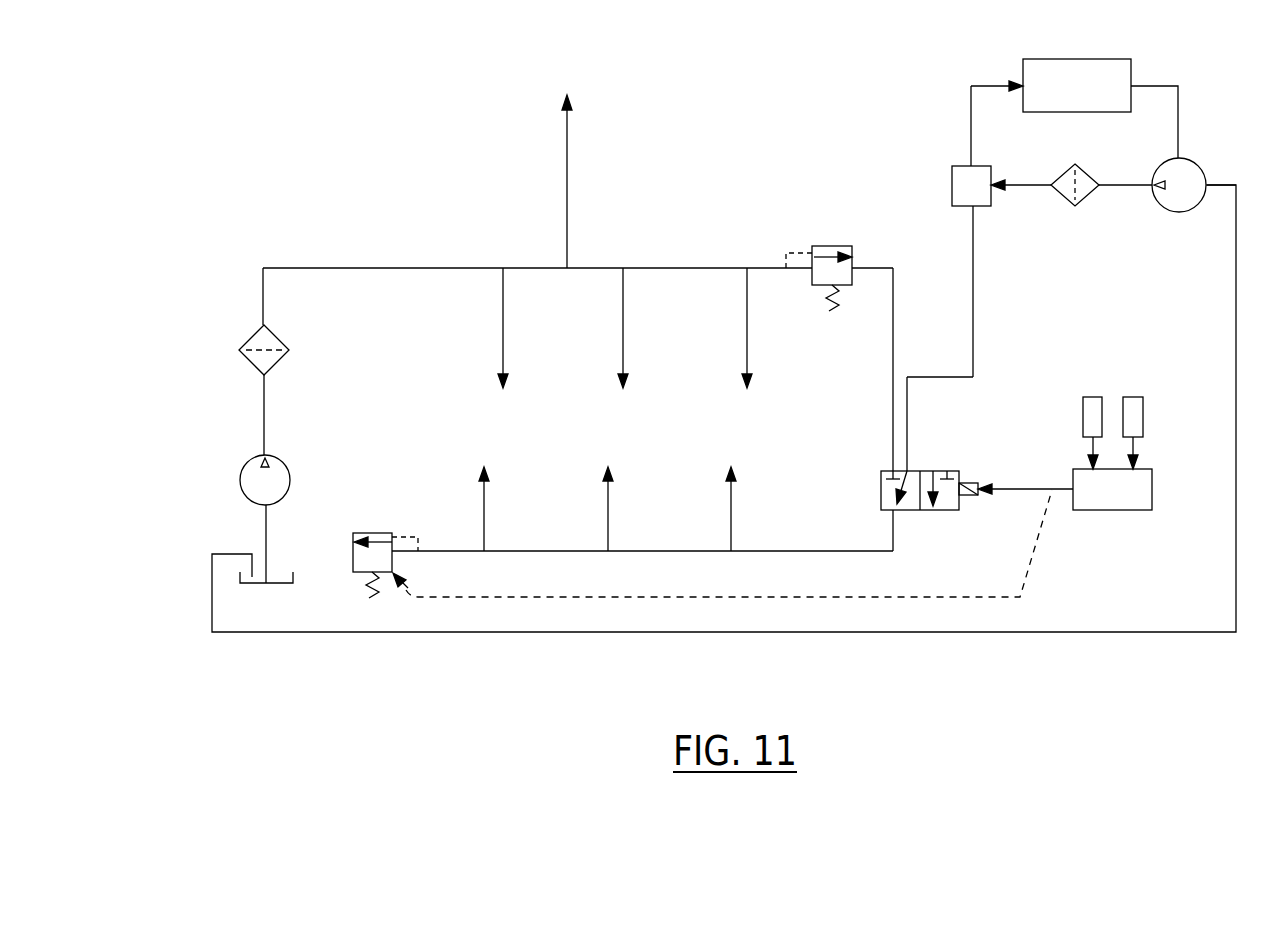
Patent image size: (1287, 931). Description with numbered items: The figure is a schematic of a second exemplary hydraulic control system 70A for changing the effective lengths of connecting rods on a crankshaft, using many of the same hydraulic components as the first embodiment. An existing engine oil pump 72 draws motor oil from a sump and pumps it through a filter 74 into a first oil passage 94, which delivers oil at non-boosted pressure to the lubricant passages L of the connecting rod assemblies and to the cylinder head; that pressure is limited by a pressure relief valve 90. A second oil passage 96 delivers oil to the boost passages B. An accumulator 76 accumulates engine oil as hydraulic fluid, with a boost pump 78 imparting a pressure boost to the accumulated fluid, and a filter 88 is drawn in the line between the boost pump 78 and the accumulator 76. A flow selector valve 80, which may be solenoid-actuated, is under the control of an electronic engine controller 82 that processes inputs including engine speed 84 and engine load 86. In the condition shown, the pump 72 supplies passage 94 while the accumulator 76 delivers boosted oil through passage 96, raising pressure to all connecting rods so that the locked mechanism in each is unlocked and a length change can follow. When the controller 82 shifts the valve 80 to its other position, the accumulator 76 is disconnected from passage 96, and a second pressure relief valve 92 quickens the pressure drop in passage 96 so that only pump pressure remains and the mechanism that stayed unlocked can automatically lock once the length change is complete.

The hydraulic control system 70A is at (355, 117).
The engine oil pump 72 is at (240, 472).
The filter 74 is at (250, 338).
The accumulator 76 is at (952, 172).
The boost pump 78 is at (1196, 165).
The flow selector valve 80 is at (958, 512).
The electronic engine controller 82 is at (1152, 483).
The engine speed 84 is at (1085, 397).
The engine load 86 is at (1140, 397).
The filter 88 is at (1083, 203).
The pressure relief valve 90 is at (822, 246).
The pressure relief valve 92 is at (370, 533).
The first oil passage 94 is at (603, 264).
The second oil passage 96 is at (557, 552).